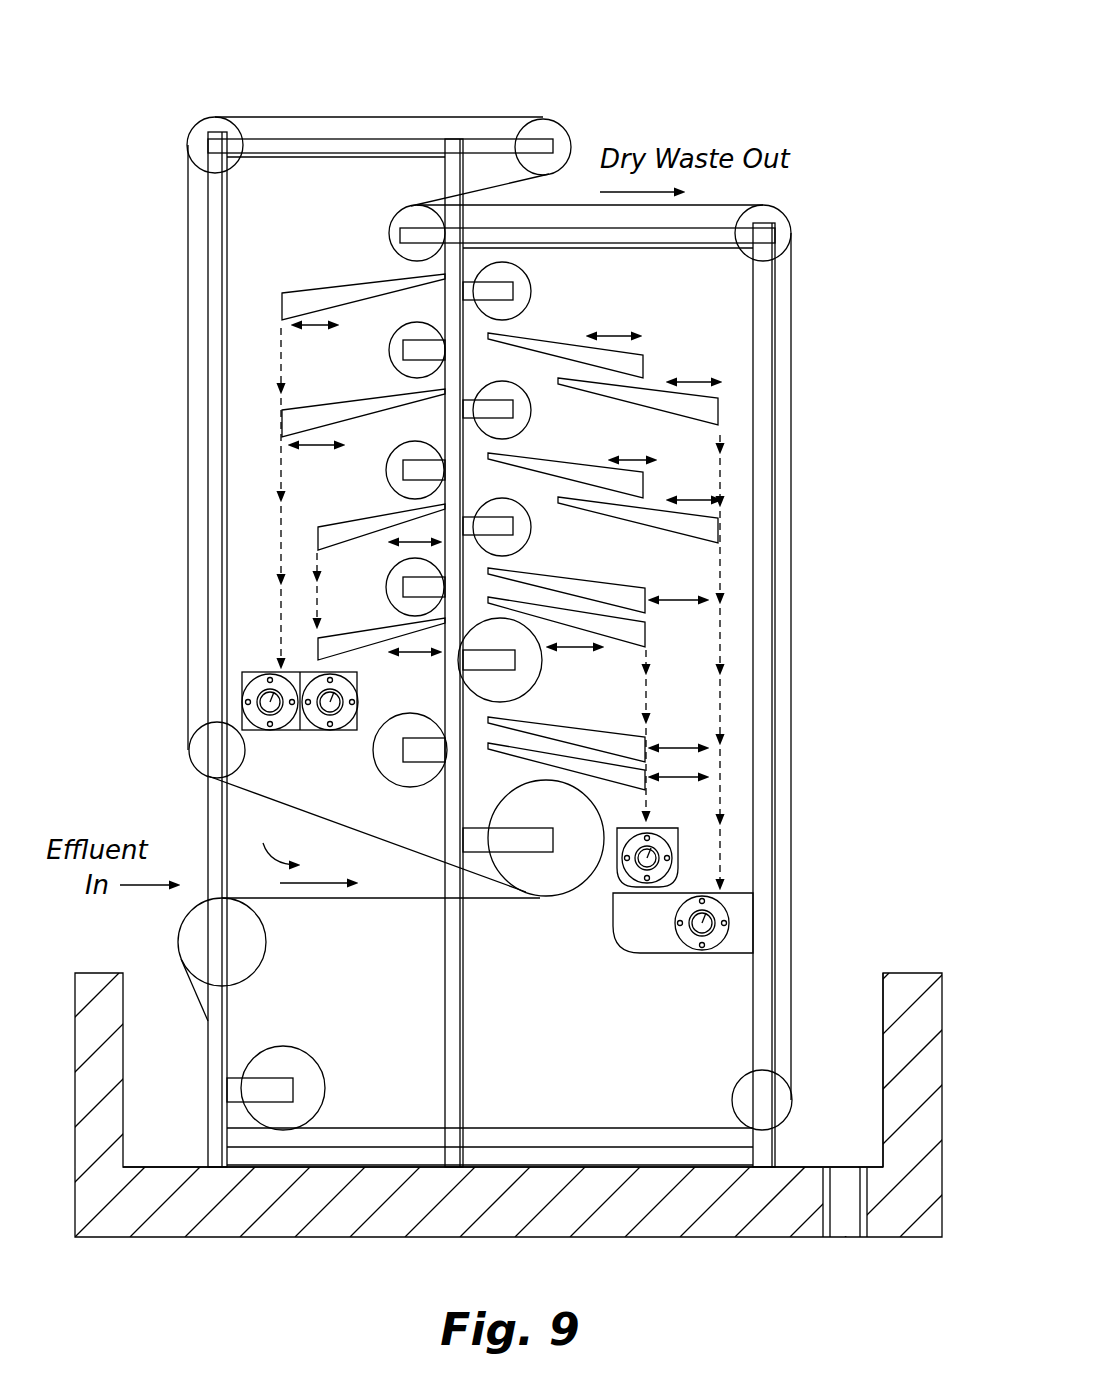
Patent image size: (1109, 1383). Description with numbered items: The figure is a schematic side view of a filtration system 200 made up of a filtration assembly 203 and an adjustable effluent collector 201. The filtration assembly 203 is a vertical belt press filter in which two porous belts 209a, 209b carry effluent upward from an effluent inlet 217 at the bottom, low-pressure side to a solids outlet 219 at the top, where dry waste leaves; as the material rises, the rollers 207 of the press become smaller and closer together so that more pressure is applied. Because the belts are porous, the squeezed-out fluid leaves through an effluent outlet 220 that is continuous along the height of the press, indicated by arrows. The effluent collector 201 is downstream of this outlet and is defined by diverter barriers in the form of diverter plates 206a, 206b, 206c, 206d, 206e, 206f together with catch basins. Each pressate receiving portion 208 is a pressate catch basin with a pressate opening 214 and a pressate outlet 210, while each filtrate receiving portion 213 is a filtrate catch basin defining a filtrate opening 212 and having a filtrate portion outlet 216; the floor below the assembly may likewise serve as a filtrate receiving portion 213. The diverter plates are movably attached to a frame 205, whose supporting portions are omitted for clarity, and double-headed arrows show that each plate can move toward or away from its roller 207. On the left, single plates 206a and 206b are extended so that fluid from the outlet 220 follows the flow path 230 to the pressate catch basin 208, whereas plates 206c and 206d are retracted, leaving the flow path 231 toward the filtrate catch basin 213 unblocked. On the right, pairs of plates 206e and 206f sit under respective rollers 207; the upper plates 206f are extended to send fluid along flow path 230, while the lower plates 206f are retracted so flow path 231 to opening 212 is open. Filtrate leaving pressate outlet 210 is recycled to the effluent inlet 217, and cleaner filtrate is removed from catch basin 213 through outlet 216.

The filtration system 200 is at (762, 100).
The adjustable effluent collector 201 is at (675, 335).
The filtration assembly 203 is at (170, 157).
The frame 205 is at (274, 148).
The rollers 207 is at (518, 288).
The pressate receiving portion 208 is at (240, 700).
The belt 209a is at (333, 900).
The belt 209b is at (377, 834).
The pressate outlet 210 is at (272, 704).
The filtrate opening 212 is at (352, 672).
The filtrate receiving portion 213 is at (298, 737).
The pressate opening 214 is at (252, 670).
The filtrate portion outlet 216 is at (330, 705).
The effluent inlet 217 is at (265, 837).
The solids outlet 219 is at (572, 182).
The effluent outlet 220 is at (390, 272).
The diverter plate 206a is at (334, 296).
The diverter plate 206b is at (347, 412).
The diverter plate 206c is at (348, 532).
The diverter plate 206d is at (348, 646).
The diverter plate 206e is at (543, 347).
The diverter plate 206f is at (647, 398).
The flow path 230 is at (281, 380).
The flow path 231 is at (318, 562).